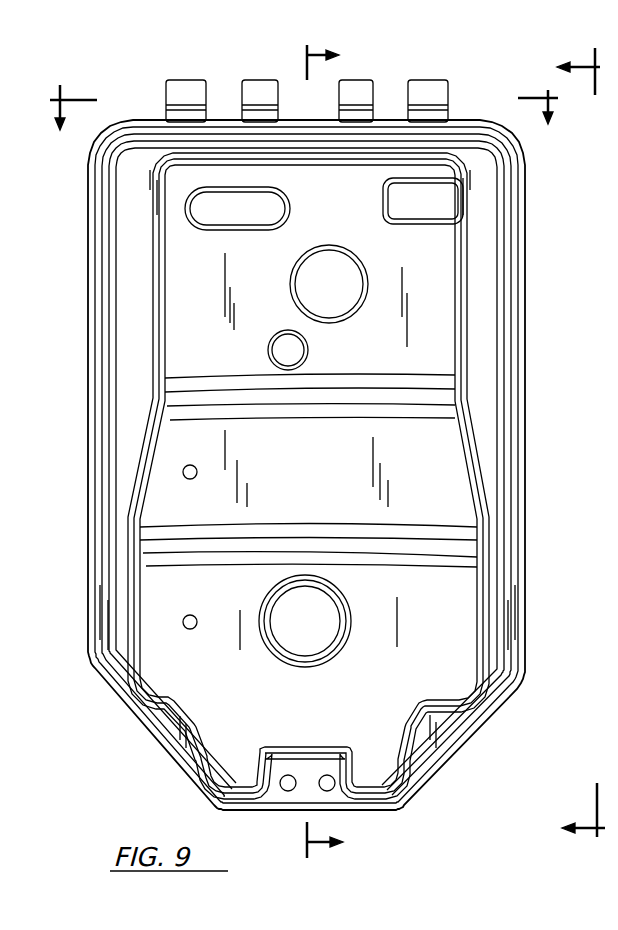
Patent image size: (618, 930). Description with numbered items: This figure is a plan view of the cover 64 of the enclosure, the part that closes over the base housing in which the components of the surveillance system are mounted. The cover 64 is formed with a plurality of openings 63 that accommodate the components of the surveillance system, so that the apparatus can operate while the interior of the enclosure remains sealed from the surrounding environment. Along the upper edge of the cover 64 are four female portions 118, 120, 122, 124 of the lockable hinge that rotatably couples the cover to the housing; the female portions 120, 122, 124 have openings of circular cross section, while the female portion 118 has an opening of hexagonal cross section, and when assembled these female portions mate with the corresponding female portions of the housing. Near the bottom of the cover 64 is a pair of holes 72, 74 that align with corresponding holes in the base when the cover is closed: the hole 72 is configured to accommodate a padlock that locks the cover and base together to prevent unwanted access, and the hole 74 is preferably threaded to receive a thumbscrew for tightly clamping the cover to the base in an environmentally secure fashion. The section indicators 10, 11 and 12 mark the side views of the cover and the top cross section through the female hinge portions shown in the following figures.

The section line 10- 10 is at (342, 450).
The section line 11- 11 is at (577, 451).
The section line 12- 12 is at (301, 110).
The openings 63 is at (328, 610).
The cover 64 is at (521, 557).
The hole 72 is at (262, 822).
The hole 74 is at (343, 825).
The female portion 118 is at (438, 80).
The female portion 120 is at (372, 80).
The female portion 122 is at (252, 82).
The female portion 124 is at (178, 80).